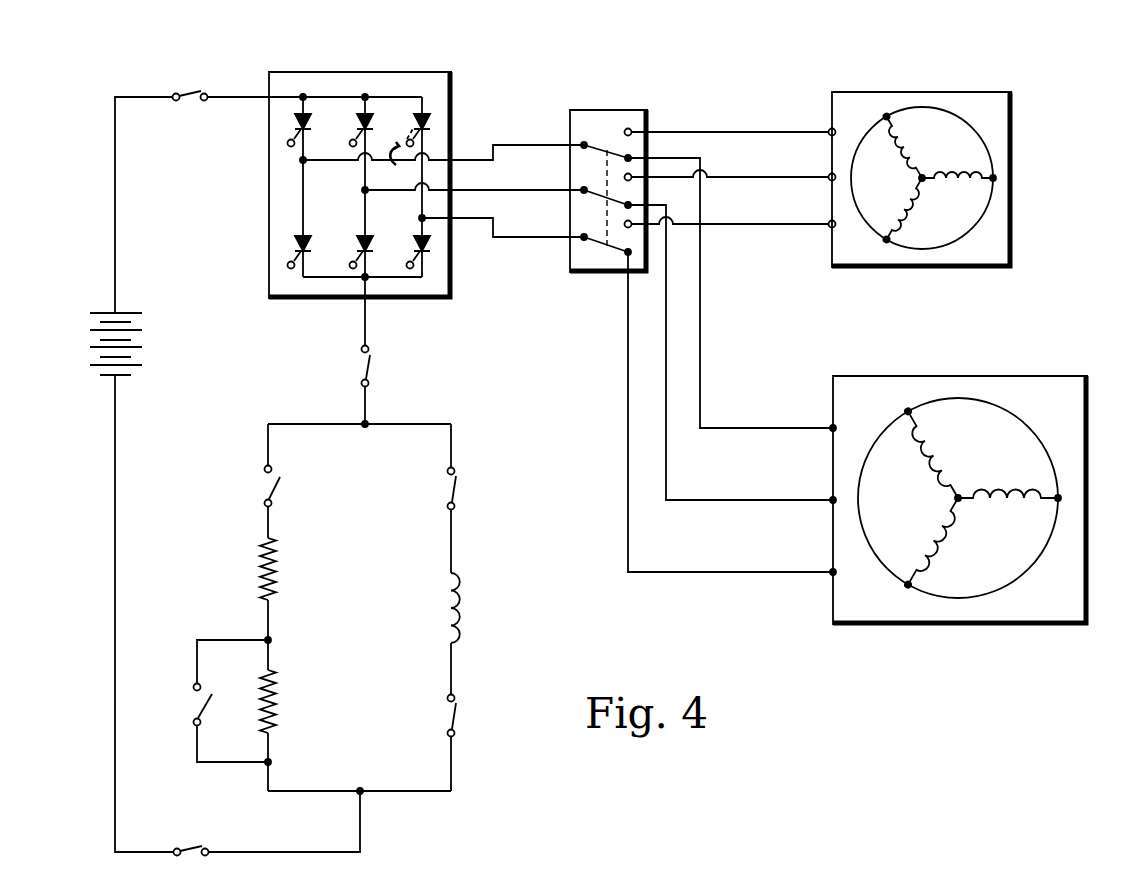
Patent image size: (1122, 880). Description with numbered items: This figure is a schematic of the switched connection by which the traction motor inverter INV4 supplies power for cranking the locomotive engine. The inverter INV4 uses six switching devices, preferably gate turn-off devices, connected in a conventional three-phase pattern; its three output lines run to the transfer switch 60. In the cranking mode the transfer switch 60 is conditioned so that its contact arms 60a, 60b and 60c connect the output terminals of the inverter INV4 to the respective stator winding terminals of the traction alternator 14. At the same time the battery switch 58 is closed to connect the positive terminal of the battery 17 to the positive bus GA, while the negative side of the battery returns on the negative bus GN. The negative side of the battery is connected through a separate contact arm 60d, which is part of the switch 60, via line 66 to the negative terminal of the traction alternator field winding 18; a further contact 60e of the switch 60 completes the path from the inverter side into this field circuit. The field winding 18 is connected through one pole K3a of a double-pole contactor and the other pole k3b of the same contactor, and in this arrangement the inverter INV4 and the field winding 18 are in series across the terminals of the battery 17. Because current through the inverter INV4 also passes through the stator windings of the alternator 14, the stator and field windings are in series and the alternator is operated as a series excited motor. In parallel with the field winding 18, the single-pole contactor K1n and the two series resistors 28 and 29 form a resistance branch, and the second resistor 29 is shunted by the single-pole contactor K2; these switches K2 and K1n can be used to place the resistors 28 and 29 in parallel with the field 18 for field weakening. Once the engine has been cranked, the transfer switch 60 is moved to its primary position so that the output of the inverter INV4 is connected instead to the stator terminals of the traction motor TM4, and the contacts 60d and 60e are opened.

The traction alternator 14 is at (893, 376).
The traction motor TM4 is at (910, 92).
The inverter INV4 is at (347, 72).
The battery 17 is at (92, 330).
The field winding 18 is at (460, 604).
The first resistor 28 is at (278, 568).
The second resistor 29 is at (278, 700).
The battery switch 58 is at (192, 97).
The transfer switch 60 is at (581, 171).
The contact arm 60a is at (592, 145).
The contact arm 60b is at (592, 190).
The contact arm 60c is at (592, 237).
The contact arm 60d is at (193, 852).
The contact 60e is at (369, 363).
The line 66 is at (115, 747).
The positive bus GA is at (115, 145).
The negative bus GN is at (115, 540).
The single-pole contactor K1n is at (281, 491).
The single-pole contactor K2 is at (200, 704).
The pole of double-pole contactor K3a is at (456, 481).
The pole of double-pole contactor k3b is at (458, 718).